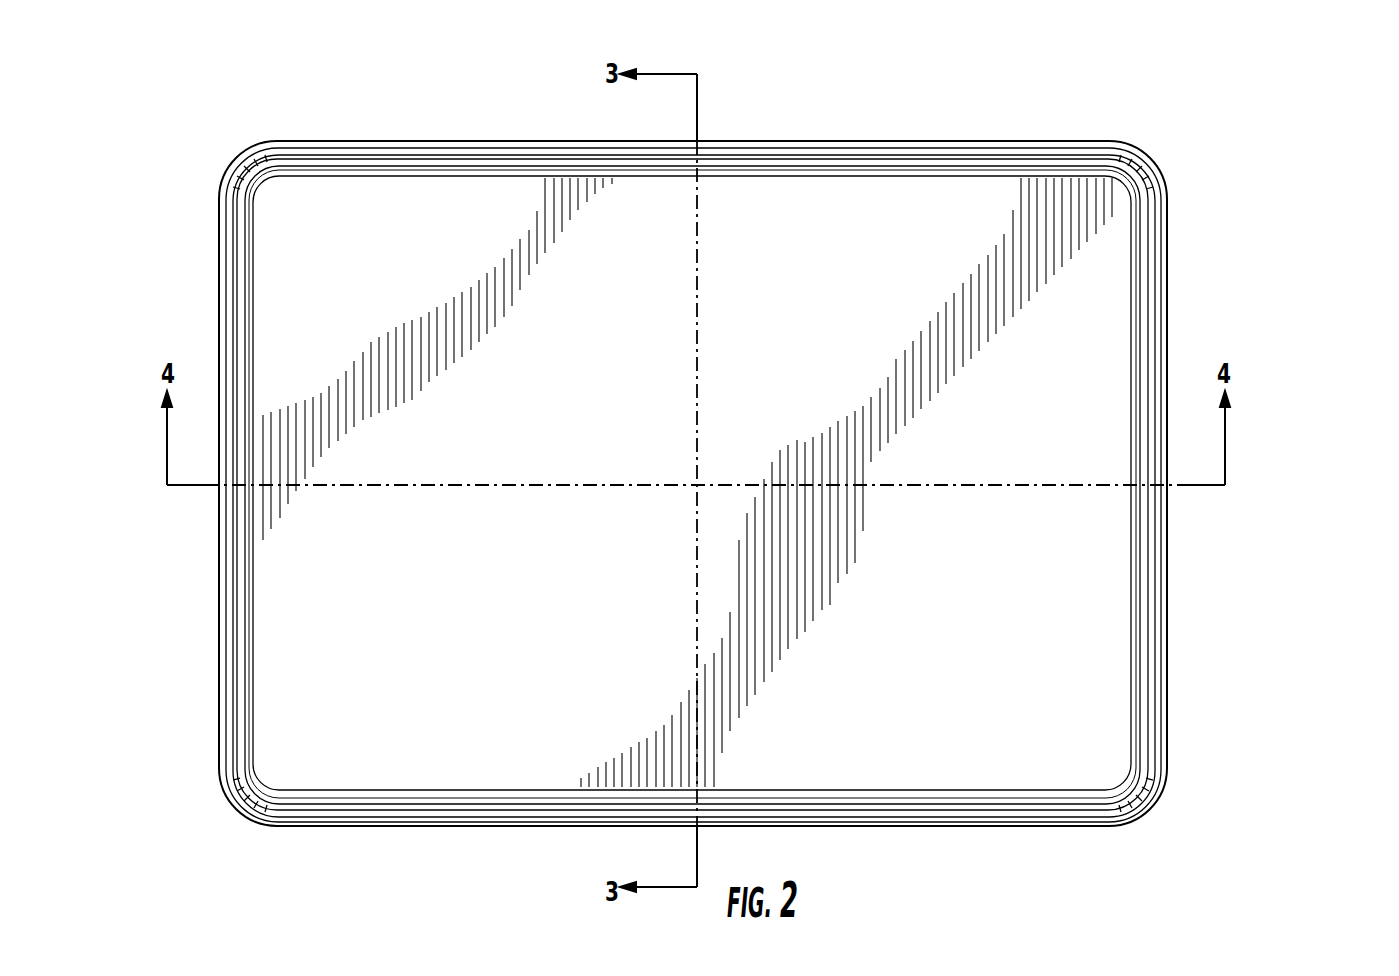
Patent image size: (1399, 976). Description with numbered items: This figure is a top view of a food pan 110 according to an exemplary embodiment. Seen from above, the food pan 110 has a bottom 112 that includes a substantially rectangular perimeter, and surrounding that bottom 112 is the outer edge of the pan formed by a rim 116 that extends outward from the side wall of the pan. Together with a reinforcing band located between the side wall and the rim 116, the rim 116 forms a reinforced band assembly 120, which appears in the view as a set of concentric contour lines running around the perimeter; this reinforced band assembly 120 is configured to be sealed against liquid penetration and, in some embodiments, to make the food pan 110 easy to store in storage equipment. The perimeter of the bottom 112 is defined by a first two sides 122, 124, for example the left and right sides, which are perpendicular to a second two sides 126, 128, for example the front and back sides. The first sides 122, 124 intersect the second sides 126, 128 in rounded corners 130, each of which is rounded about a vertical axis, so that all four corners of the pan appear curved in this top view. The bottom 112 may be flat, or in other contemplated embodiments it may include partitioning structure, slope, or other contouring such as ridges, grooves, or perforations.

The food pan 110 is at (1277, 100).
The bottom 112 is at (957, 572).
The rim 116 is at (1167, 247).
The reinforced band assembly 120 is at (1163, 674).
The first side 122 is at (1135, 568).
The first side 124 is at (253, 568).
The second side 126 is at (795, 165).
The second side 128 is at (857, 795).
The rounded corners 130 is at (262, 182).